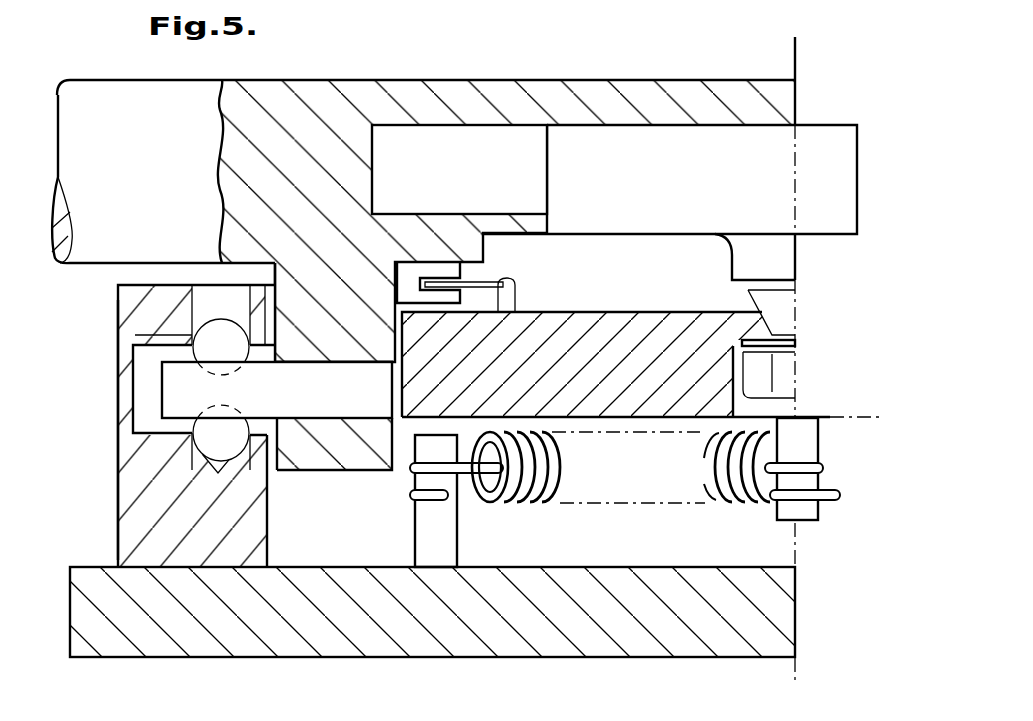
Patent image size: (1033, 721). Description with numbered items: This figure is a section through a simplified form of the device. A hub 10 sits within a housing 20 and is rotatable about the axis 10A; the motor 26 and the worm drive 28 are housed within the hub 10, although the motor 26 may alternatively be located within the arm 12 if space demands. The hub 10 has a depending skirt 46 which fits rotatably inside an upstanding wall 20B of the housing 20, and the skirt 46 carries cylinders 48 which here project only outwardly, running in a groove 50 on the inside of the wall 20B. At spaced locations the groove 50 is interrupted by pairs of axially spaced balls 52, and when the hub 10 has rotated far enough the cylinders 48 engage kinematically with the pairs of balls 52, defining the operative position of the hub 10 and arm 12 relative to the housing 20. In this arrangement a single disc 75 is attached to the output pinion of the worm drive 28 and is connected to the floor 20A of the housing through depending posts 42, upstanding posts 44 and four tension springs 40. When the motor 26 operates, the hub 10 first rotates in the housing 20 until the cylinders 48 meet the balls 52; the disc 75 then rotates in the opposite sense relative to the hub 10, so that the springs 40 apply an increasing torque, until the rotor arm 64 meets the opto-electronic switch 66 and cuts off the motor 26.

The hub 10 is at (547, 79).
The axis 10A is at (795, 52).
The arm 12 is at (102, 245).
The housing 20 is at (117, 537).
The floor of the housing 20A is at (775, 618).
The upstanding wall of the housing 20B is at (118, 485).
The motor 26 is at (424, 132).
The worm drive 28 is at (641, 145).
The tension springs 40 is at (543, 503).
The depending posts 42 is at (810, 442).
The upstanding posts 44 is at (433, 532).
The depending skirt 46 is at (292, 320).
The cylinders 48 is at (321, 395).
The groove 50 is at (143, 393).
The balls 52 is at (203, 340).
The rotor arm 64 is at (483, 278).
The opto-electronic switch 66 is at (414, 275).
The single disc 75 is at (627, 333).